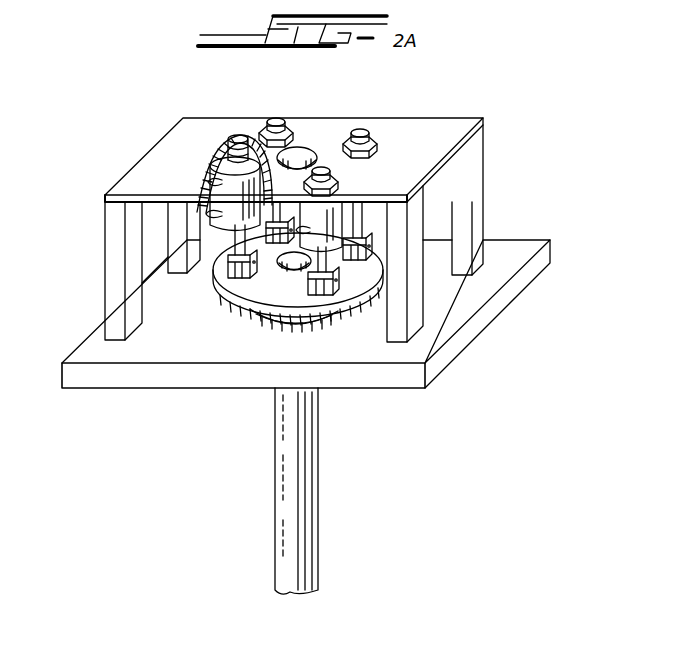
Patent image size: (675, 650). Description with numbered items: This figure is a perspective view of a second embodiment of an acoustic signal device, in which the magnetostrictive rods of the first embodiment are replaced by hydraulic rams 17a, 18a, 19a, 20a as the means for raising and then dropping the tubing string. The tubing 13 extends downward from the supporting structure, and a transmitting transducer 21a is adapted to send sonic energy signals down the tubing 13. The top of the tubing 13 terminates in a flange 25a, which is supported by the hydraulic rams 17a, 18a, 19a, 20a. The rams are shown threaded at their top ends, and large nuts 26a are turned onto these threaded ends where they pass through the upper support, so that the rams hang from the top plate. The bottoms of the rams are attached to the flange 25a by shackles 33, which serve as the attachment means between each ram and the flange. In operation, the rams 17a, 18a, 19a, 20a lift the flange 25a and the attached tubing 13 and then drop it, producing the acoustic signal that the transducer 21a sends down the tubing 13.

The tubing 13 is at (303, 477).
The hydraulic ram 17a is at (221, 226).
The hydraulic ram 18a is at (305, 279).
The hydraulic ram 19a is at (255, 228).
The hydraulic ram 20a is at (370, 224).
The disc rim 21a is at (368, 309).
The hub boss 25a is at (243, 307).
The hex nuts 26a is at (323, 166).
The shackle 33 is at (265, 224).